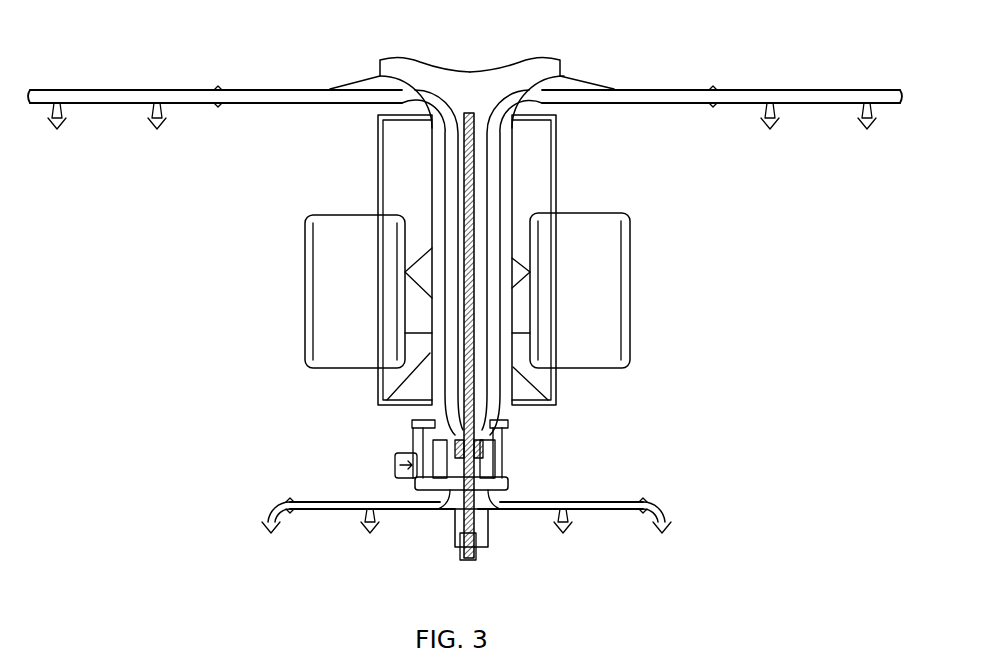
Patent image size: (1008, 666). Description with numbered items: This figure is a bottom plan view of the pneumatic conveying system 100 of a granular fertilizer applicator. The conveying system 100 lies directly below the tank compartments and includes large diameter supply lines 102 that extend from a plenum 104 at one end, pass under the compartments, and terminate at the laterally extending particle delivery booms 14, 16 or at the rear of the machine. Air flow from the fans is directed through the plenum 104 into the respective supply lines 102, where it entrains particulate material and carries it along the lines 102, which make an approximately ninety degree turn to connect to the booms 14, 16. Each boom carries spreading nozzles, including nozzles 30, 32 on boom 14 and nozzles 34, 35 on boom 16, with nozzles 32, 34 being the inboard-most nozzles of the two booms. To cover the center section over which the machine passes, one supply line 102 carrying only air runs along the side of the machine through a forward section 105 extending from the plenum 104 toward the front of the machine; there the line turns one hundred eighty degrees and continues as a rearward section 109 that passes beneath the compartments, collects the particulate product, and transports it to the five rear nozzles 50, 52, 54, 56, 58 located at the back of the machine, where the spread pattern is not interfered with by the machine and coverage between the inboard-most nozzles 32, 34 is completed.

The particle delivery boom 14 is at (640, 86).
The particle delivery boom 16 is at (318, 88).
The nozzle 30 is at (867, 131).
The nozzle 32 is at (770, 131).
The nozzle 34 is at (158, 131).
The nozzle 35 is at (59, 131).
The rear nozzle 50 is at (664, 536).
The rear nozzle 52 is at (563, 536).
The rear nozzle 54 is at (457, 540).
The rear nozzle 56 is at (368, 536).
The rear nozzle 58 is at (268, 536).
The pneumatic conveying system 100 is at (375, 404).
The supply line 102 is at (498, 185).
The plenum 104 is at (492, 478).
The forward section 105 is at (508, 303).
The rearward section 109 is at (488, 418).